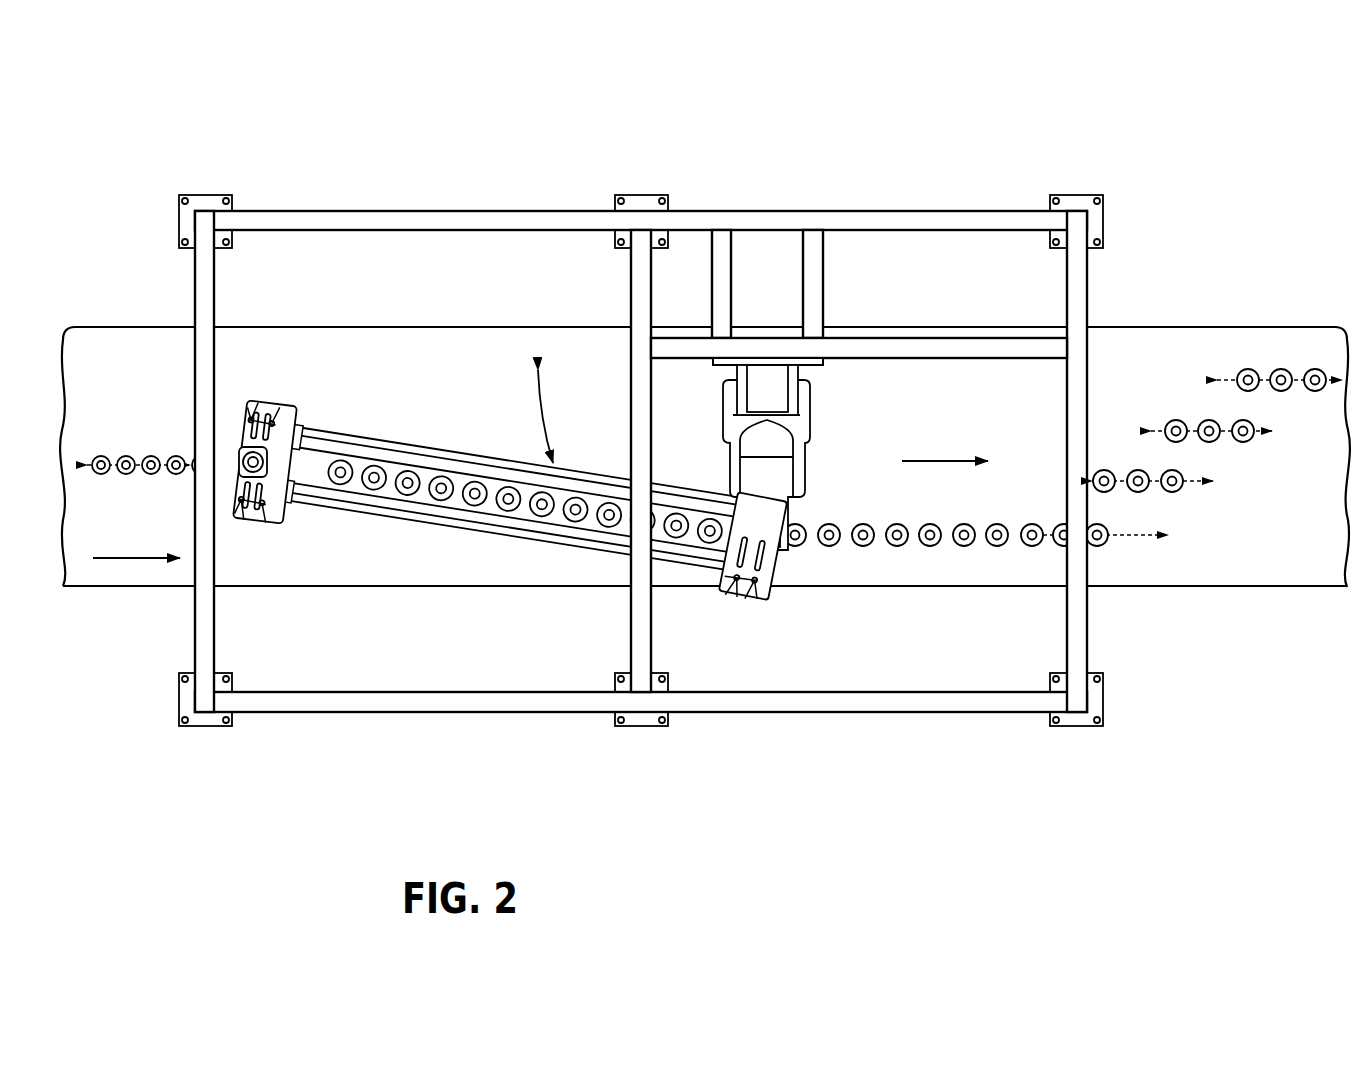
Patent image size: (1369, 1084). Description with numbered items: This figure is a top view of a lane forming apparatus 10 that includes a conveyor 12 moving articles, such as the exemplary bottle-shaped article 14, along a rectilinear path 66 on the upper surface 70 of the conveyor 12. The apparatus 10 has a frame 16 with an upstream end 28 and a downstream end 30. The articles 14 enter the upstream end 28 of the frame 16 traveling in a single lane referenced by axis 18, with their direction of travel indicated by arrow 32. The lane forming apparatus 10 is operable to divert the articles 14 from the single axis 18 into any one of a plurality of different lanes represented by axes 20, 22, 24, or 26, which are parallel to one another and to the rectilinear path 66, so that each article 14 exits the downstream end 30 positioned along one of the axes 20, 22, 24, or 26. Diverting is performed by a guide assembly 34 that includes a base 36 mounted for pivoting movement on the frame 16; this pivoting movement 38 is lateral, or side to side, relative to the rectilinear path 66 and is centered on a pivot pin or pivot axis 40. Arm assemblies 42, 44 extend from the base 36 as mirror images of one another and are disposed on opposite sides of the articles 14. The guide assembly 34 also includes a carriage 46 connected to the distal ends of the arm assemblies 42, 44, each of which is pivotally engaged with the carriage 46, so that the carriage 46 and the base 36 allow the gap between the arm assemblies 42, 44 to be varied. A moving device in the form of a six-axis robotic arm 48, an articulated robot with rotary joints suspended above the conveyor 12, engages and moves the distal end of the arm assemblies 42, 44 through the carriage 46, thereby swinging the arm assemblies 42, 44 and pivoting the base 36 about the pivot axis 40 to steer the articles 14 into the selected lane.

The lane forming apparatus 10 is at (616, 434).
The conveyor 12 is at (705, 416).
The upper surface of the conveyor 70 is at (1153, 348).
The article 14 is at (120, 455).
The frame 16 is at (372, 210).
The axis 18 is at (139, 470).
The axis 20 is at (1130, 540).
The axis 22 is at (1190, 487).
The axis 24 is at (1227, 437).
The axis 26 is at (1265, 387).
The upstream end 28 is at (200, 298).
The downstream end 30 is at (1077, 615).
The arrow 32 is at (137, 560).
The guide assembly 34 is at (340, 668).
The base 36 is at (278, 462).
The pivoting movement 38 is at (548, 430).
The pivot axis 40 is at (248, 462).
The arm assembly 42 is at (455, 452).
The arm assembly 44 is at (442, 528).
The carriage 46 is at (775, 598).
The six-axis robotic arm 48 is at (807, 400).
The rectilinear path 66 is at (912, 460).